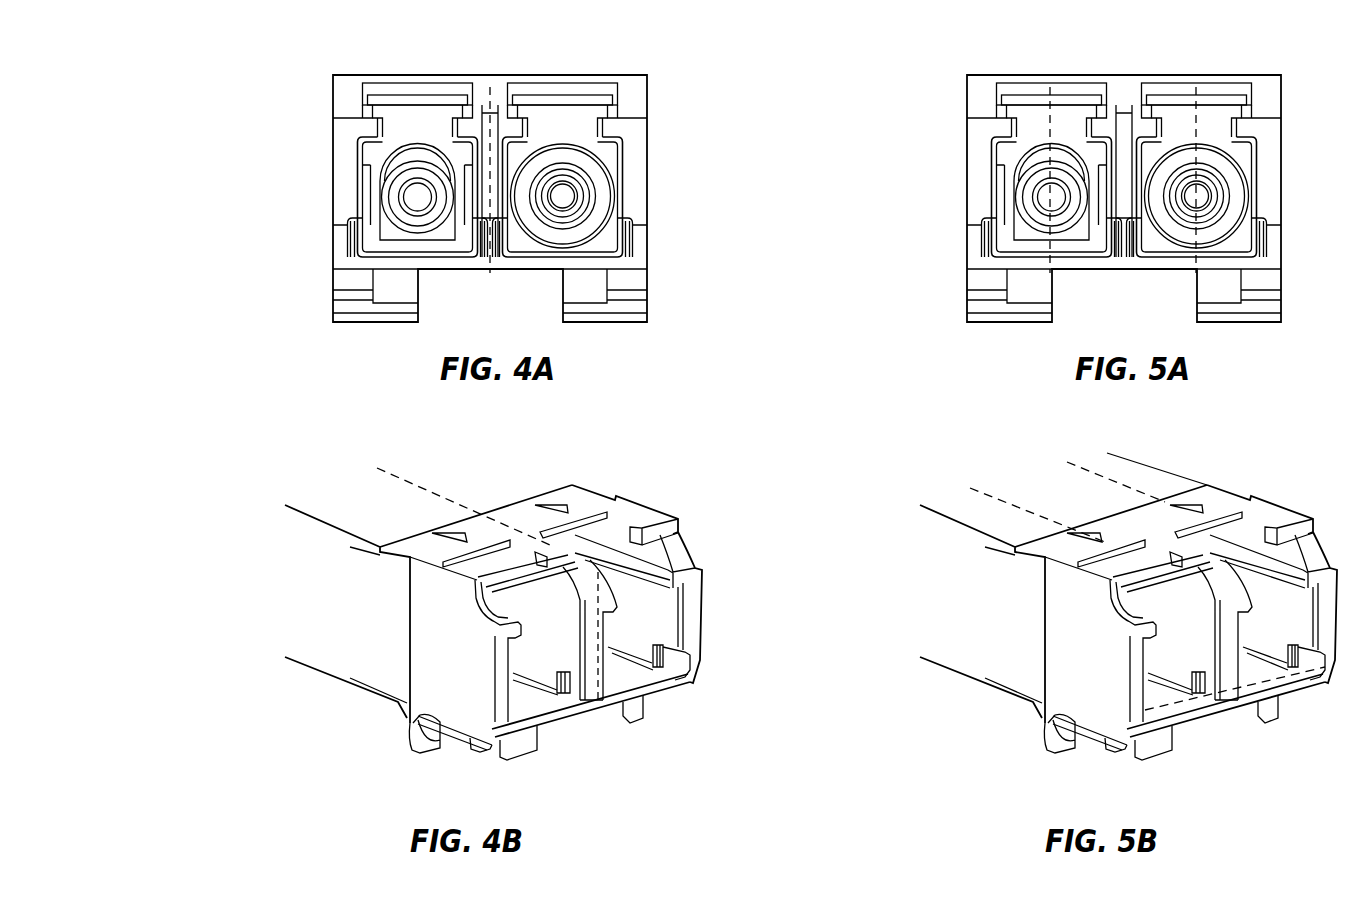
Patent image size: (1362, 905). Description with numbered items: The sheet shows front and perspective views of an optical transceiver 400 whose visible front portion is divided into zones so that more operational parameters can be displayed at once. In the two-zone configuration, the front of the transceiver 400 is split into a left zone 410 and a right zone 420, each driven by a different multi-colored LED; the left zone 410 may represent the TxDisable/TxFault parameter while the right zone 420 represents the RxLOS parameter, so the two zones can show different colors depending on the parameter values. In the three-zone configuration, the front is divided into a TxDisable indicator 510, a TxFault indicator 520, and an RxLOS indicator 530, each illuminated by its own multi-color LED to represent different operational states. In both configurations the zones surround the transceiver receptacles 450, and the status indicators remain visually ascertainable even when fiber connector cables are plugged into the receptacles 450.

In FIG. 4B, the transceiver 400 is at (489, 768).
In FIG. 4A, the left zone 410 is at (397, 82).
In FIG. 4B, the left zone 410 is at (383, 519).
In FIG. 4A, the right zone 420 is at (578, 82).
In FIG. 4B, the right zone 420 is at (492, 486).
In FIG. 4B, the transceiver receptacles 450 is at (532, 664).
In FIG. 5B, the transceiver receptacles 450 is at (1167, 664).
In FIG. 5A, the TxDisable indicator 510 is at (1008, 84).
In FIG. 5B, the TxDisable indicator 510 is at (982, 518).
In FIG. 5A, the TxFault indicator 520 is at (1122, 82).
In FIG. 5B, the TxFault indicator 520 is at (1053, 497).
In FIG. 5A, the RxLOS indicator 530 is at (1238, 82).